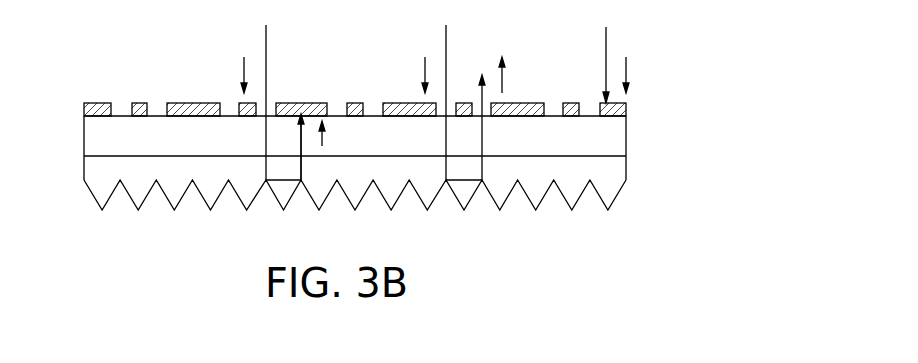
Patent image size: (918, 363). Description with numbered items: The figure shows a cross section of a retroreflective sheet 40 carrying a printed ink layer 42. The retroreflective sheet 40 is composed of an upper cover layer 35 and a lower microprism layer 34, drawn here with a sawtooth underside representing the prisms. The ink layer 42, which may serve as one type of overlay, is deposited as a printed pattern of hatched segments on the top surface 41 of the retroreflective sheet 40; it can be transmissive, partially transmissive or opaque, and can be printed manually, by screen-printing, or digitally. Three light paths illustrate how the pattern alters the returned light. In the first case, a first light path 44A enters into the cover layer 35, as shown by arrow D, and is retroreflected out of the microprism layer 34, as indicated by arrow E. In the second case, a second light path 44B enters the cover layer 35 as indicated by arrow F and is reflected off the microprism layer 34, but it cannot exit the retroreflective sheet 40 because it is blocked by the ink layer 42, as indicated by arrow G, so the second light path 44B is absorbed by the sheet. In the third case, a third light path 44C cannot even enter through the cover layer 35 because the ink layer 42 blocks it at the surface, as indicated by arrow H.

The microprism layer 34 is at (84, 167).
The cover layer 35 is at (84, 137).
The top surface 41 is at (118, 114).
The ink layer 42 is at (95, 103).
The first light path 44A is at (446, 40).
The second light path 44B is at (266, 40).
The third light path 44C is at (606, 41).
The retroreflective sheet 40 is at (688, 124).
The arrow D is at (425, 72).
The arrow E is at (503, 81).
The arrow F is at (244, 72).
The arrow G is at (323, 146).
The arrow H is at (627, 72).